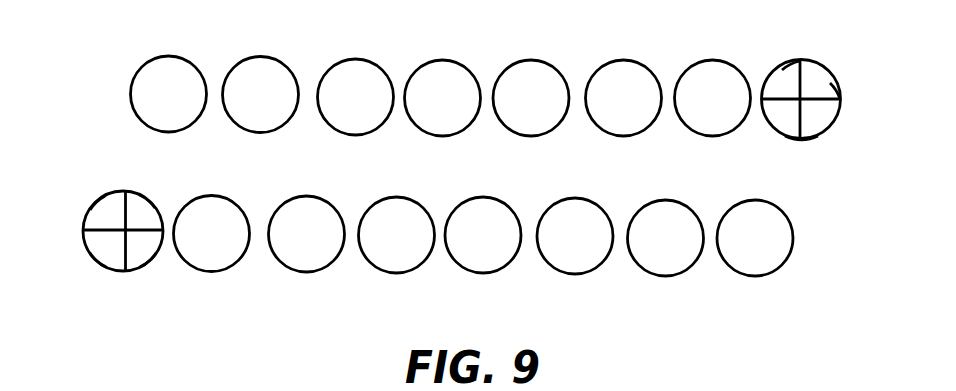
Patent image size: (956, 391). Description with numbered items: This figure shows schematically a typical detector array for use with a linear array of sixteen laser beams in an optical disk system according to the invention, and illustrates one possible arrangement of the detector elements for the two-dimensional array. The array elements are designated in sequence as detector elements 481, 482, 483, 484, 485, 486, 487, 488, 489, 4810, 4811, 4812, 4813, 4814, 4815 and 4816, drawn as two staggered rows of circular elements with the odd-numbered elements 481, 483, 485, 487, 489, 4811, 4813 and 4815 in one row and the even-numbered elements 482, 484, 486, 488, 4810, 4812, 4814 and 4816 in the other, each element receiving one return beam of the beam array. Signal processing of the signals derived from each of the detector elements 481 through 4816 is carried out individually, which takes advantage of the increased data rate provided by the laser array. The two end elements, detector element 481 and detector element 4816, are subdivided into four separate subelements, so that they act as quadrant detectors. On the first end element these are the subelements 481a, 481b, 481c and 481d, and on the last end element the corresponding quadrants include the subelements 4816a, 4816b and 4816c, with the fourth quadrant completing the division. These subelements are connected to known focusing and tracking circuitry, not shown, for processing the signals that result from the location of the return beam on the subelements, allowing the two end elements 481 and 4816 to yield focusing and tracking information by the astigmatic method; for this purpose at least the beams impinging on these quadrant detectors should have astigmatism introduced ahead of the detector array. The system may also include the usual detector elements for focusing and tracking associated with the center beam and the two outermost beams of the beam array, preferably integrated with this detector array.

The detector element 481 is at (100, 282).
The subelement 481a is at (105, 205).
The subelement 481b is at (140, 212).
The subelement 481c is at (145, 257).
The subelement 481d is at (105, 250).
The detector element 482 is at (164, 56).
The detector element 483 is at (218, 270).
The detector element 484 is at (264, 57).
The detector element 485 is at (310, 272).
The detector element 486 is at (353, 57).
The detector element 487 is at (400, 274).
The detector element 488 is at (444, 60).
The detector element 489 is at (485, 274).
The detector element 4810 is at (528, 60).
The detector element 4811 is at (578, 274).
The detector element 4812 is at (622, 60).
The detector element 4813 is at (672, 276).
The detector element 4814 is at (714, 59).
The detector element 4815 is at (760, 276).
The detector element 4816 is at (850, 52).
The subelement 4816a is at (782, 72).
The subelement 4816b is at (830, 83).
The subelement 4816c is at (818, 116).